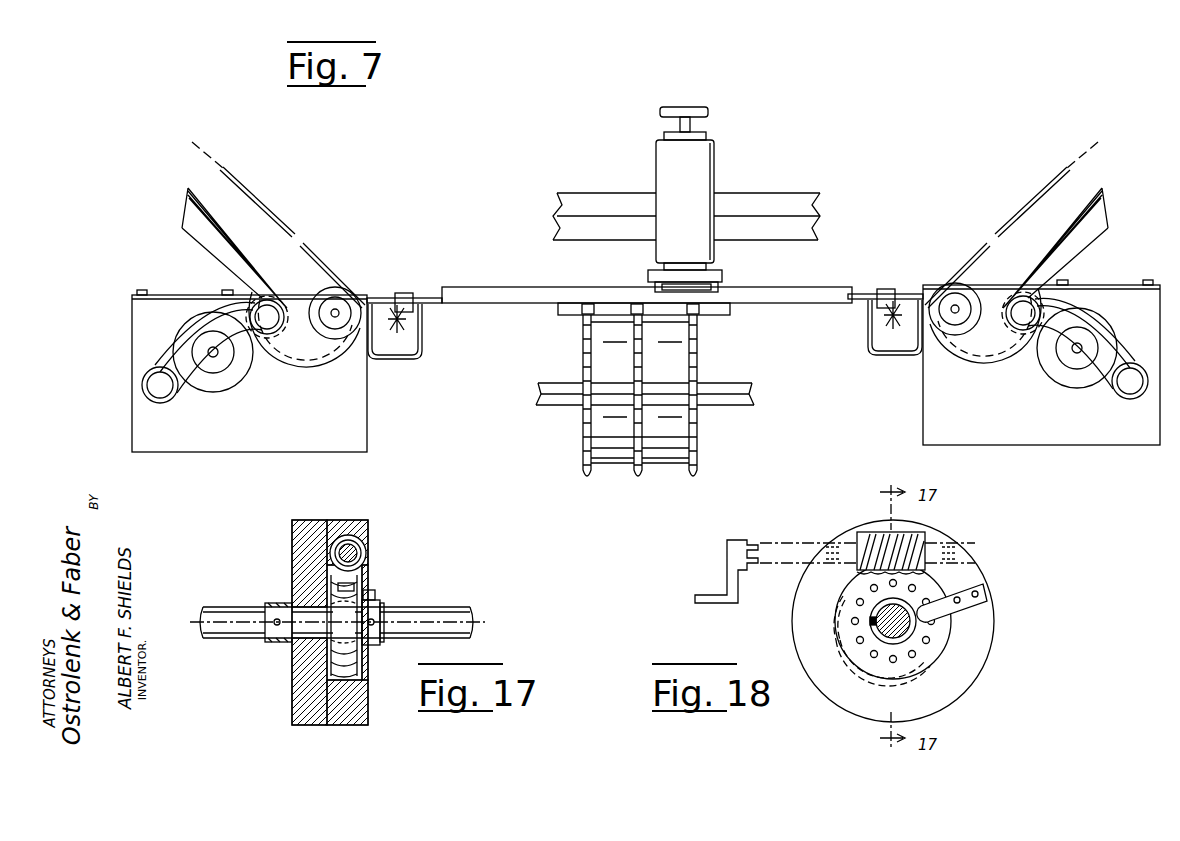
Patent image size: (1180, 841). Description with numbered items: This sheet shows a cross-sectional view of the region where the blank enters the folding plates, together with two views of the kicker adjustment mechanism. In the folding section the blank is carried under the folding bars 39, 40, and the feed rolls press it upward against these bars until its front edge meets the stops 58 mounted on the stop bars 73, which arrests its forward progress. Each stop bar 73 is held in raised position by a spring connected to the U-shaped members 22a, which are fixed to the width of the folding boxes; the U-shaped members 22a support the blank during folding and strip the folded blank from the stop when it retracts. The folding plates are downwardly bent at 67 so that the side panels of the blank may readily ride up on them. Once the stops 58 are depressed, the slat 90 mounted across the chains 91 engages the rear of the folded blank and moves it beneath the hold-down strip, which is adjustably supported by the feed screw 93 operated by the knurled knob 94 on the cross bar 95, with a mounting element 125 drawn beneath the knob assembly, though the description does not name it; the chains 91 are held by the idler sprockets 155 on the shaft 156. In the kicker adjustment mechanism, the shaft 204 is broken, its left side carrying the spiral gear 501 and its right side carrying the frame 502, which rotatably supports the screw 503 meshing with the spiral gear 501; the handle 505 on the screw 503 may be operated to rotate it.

In FIG. 7, the downward bend of folding plate 67 is at (188, 196).
In FIG. 7, the folding bar 40 is at (381, 297).
In FIG. 7, the stop 58 is at (402, 293).
In FIG. 7, the stop bar 73 is at (392, 308).
In FIG. 7, the U-shaped member 22a is at (422, 345).
In FIG. 7, the folding bar 39 is at (927, 295).
In FIG. 7, the knurled knob 94 is at (712, 156).
In FIG. 7, the cross bar 95 is at (757, 196).
In FIG. 7, the mounting plate 125 is at (722, 275).
In FIG. 7, the feed screw 93 is at (690, 290).
In FIG. 7, the slat 90 is at (803, 290).
In FIG. 7, the chains 91 is at (563, 312).
In FIG. 7, the idler sprocket 155 is at (587, 477).
In FIG. 7, the shaft 156 is at (548, 407).
In FIG. 17, the frame 502 is at (306, 543).
In FIG. 17, the screw 503 is at (353, 556).
In FIG. 17, the spiral gear 501 is at (357, 589).
In FIG. 17, the shaft 204 is at (219, 618).
In FIG. 18, the handle 505 is at (728, 548).